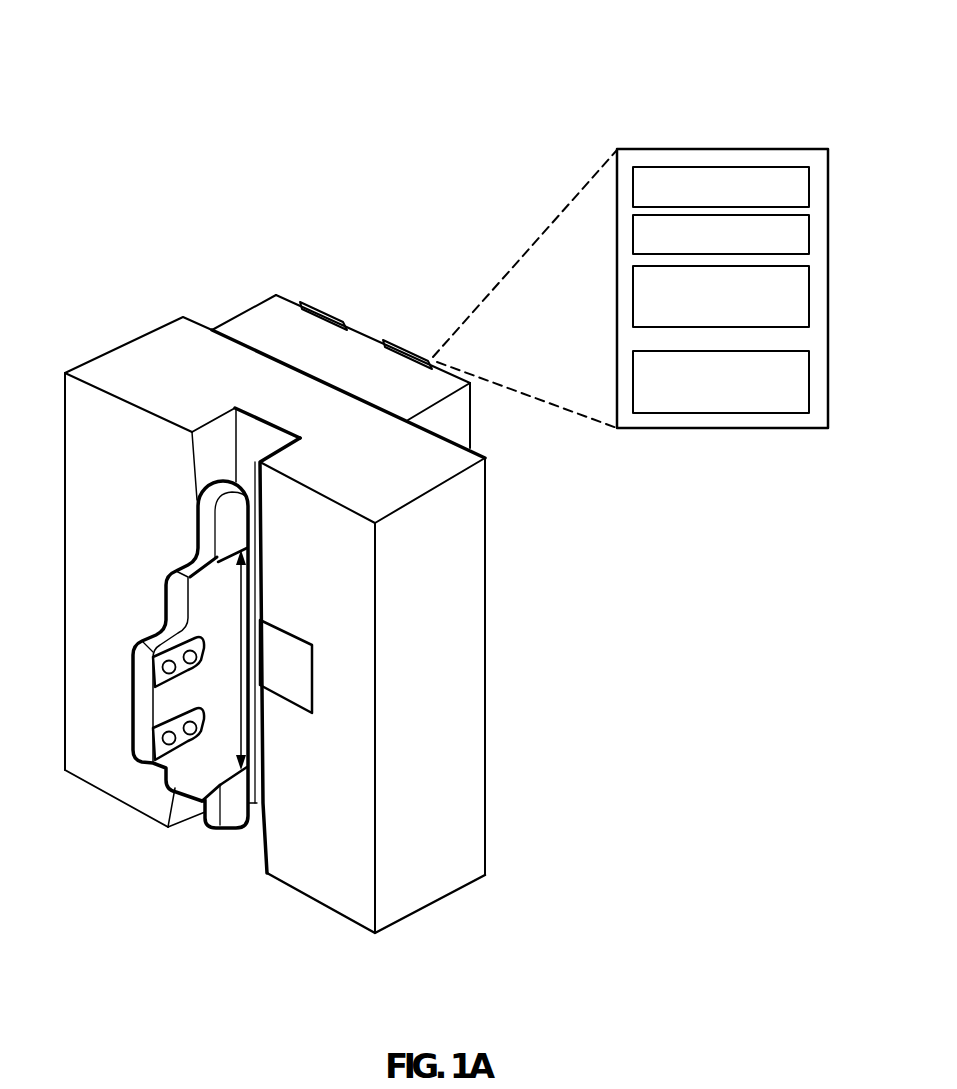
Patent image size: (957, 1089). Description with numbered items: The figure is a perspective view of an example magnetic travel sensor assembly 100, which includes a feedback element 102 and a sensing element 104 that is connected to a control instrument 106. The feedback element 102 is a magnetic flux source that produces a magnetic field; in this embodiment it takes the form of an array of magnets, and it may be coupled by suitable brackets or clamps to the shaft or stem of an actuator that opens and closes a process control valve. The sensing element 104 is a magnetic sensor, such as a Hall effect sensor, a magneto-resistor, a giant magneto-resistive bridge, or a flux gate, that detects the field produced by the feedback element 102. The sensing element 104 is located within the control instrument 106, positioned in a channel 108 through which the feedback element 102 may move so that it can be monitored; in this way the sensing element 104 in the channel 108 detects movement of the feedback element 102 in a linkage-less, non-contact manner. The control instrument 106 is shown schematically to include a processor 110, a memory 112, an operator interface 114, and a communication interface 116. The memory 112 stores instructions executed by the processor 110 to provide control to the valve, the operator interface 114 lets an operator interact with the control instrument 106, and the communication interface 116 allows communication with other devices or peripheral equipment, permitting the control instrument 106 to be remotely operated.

The magnetic travel sensor assembly 100 is at (442, 107).
The feedback element 102 is at (238, 810).
The sensing element 104 is at (290, 703).
The control instrument 106 is at (240, 312).
The channel 108 is at (218, 452).
The processor 110 is at (810, 189).
The memory 112 is at (810, 230).
The operator interface 114 is at (810, 286).
The communication interface 116 is at (810, 379).